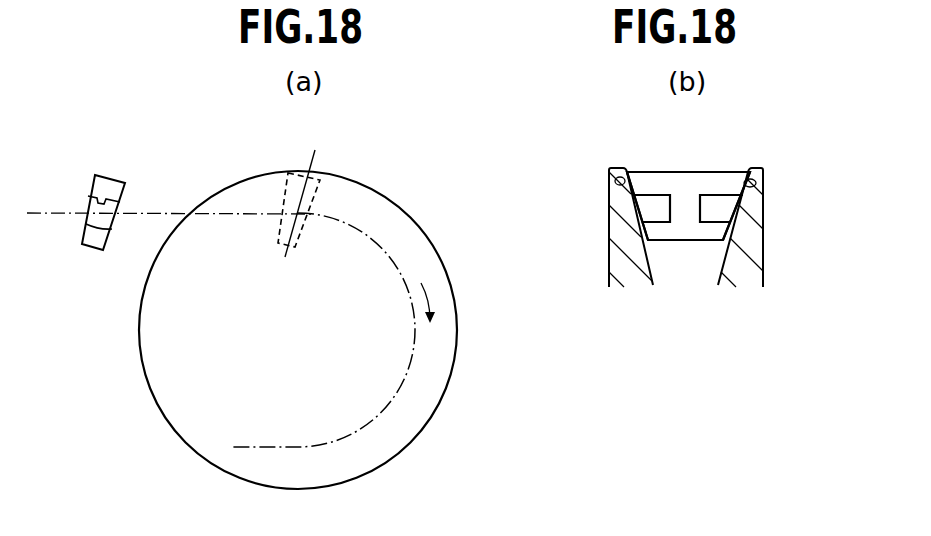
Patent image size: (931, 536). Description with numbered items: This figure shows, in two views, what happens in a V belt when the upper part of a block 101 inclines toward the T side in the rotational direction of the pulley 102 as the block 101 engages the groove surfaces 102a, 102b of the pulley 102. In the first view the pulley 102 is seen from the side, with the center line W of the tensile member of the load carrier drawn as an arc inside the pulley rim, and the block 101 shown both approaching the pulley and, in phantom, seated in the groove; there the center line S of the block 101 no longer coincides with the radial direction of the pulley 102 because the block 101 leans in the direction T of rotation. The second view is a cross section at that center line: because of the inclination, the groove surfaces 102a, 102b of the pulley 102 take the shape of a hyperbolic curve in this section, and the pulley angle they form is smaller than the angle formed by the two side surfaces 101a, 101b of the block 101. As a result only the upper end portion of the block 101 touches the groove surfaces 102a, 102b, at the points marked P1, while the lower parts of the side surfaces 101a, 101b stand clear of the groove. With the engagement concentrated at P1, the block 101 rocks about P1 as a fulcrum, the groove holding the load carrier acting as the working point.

The block 101 is at (108, 182).
The pulley 102 is at (388, 199).
The side surface of the block 101a is at (644, 234).
The side surface of the block 101b is at (727, 237).
The pulley groove surface 102a is at (657, 265).
The pulley groove surface 102b is at (713, 263).
The upper end portion of the block P1 is at (782, 165).
The center line of the block S is at (309, 165).
The center line of the tensile member of load carrier W is at (418, 251).
The rotational direction of the pulley T is at (430, 320).